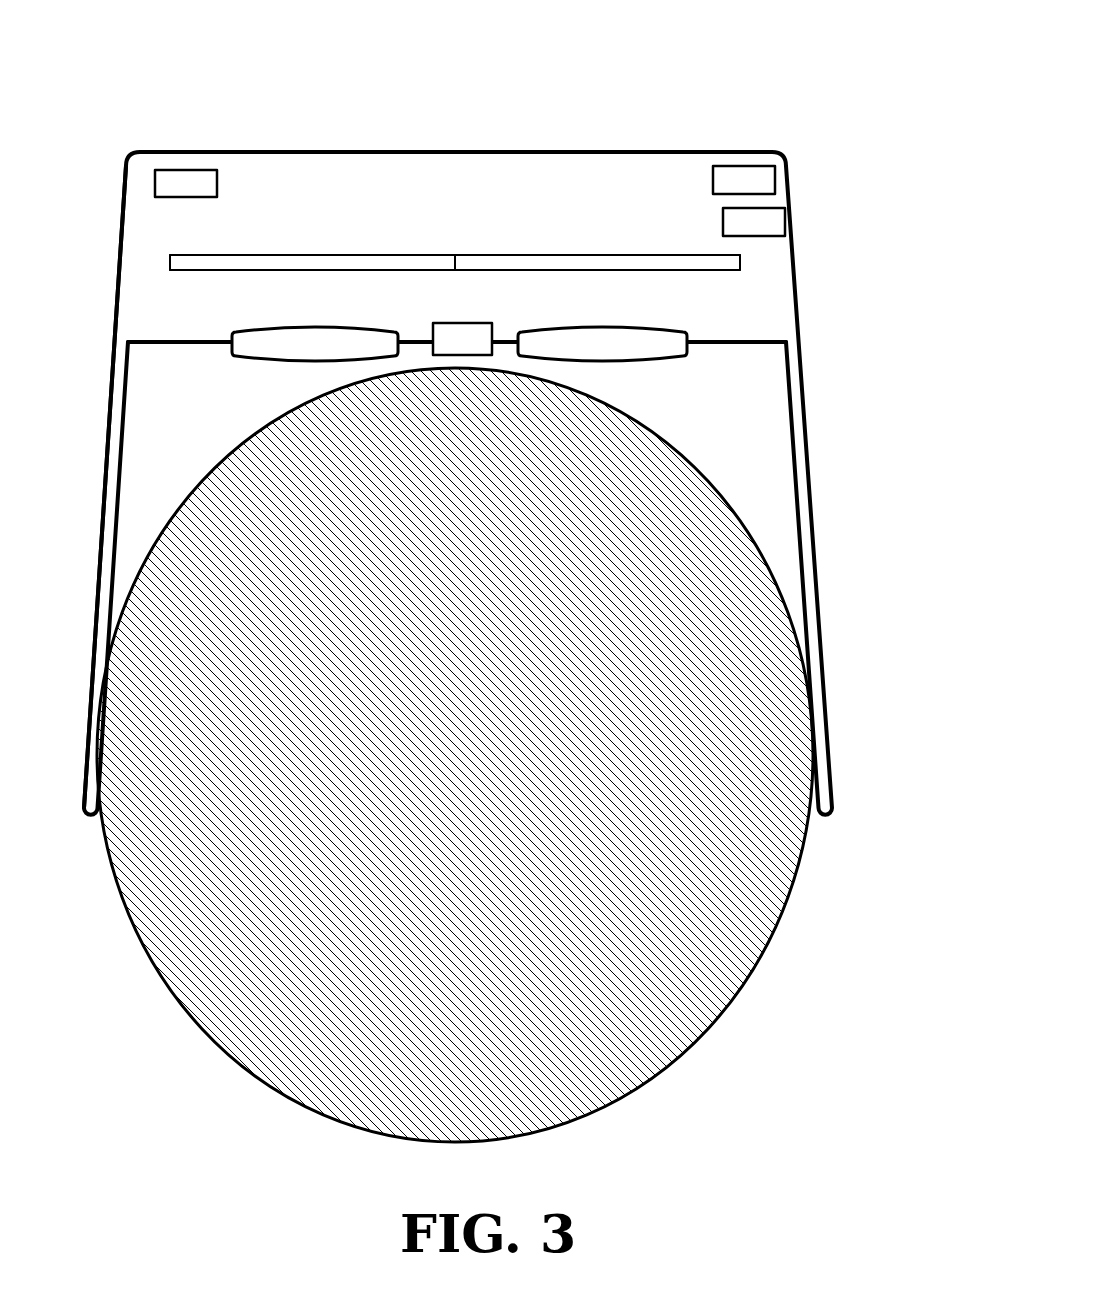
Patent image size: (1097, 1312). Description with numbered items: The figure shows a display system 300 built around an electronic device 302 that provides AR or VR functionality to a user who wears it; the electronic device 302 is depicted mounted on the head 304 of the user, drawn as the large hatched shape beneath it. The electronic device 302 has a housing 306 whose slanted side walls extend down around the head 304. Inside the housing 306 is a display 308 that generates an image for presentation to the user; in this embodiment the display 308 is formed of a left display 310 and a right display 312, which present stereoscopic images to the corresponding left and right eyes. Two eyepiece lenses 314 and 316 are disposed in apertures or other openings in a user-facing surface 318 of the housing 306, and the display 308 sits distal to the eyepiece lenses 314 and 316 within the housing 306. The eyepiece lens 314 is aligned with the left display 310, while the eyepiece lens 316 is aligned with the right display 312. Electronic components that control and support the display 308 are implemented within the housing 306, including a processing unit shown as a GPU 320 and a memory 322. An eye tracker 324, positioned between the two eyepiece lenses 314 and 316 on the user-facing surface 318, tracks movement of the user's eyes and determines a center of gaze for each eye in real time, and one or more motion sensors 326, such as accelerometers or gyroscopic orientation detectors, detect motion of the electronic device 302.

The display system 300 is at (853, 44).
The electronic device 302 is at (554, 120).
The head 304 is at (121, 893).
The housing 306 is at (115, 295).
The display 308 is at (477, 236).
The left display 310 is at (195, 274).
The right display 312 is at (718, 274).
The eyepiece lens 314 is at (262, 360).
The eyepiece lens 316 is at (652, 360).
The user-facing surface 318 is at (153, 350).
The GPU 320 is at (726, 190).
The memory 322 is at (736, 232).
The eye tracker 324 is at (444, 350).
The motion sensors 326 is at (168, 194).